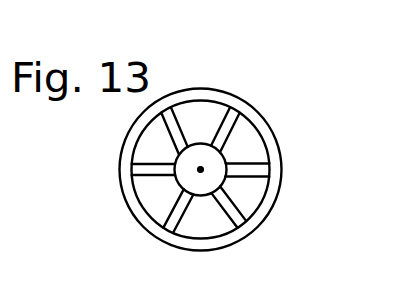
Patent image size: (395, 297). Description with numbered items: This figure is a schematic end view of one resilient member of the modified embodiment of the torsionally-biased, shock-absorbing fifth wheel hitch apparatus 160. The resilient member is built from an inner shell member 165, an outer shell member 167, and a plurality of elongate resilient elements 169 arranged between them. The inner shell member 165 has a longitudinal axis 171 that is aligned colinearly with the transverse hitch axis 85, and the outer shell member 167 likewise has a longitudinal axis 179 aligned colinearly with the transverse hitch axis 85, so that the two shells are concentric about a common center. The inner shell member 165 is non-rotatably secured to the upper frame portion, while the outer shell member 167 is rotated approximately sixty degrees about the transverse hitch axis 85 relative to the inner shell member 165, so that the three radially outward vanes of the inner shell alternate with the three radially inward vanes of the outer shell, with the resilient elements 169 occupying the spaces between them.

The modified embodiment of the torsionally-biased, shock-absorbing fifth wheel hitch 160 is at (262, 90).
The inner shell member 165 is at (177, 160).
The outer shell member 167 is at (243, 235).
The elongate resilient elements 169 is at (255, 152).
The transverse hitch axis 85 is at (200, 170).
The longitudinal axis 171 is at (200, 170).
The longitudinal axis 179 is at (200, 170).